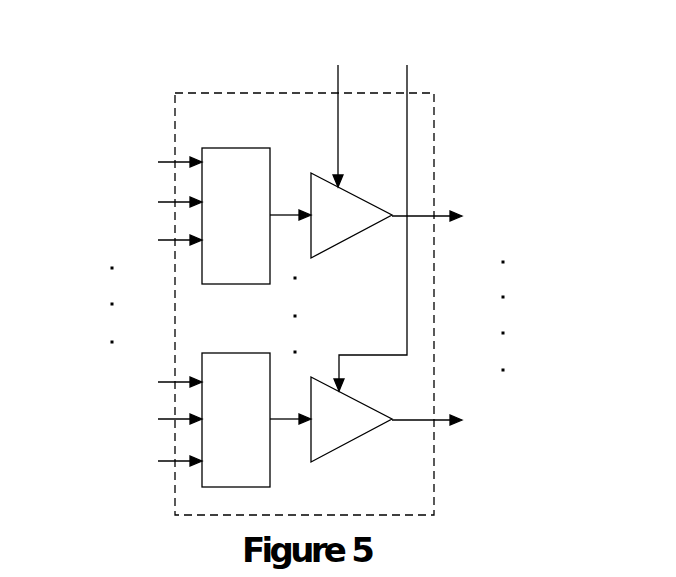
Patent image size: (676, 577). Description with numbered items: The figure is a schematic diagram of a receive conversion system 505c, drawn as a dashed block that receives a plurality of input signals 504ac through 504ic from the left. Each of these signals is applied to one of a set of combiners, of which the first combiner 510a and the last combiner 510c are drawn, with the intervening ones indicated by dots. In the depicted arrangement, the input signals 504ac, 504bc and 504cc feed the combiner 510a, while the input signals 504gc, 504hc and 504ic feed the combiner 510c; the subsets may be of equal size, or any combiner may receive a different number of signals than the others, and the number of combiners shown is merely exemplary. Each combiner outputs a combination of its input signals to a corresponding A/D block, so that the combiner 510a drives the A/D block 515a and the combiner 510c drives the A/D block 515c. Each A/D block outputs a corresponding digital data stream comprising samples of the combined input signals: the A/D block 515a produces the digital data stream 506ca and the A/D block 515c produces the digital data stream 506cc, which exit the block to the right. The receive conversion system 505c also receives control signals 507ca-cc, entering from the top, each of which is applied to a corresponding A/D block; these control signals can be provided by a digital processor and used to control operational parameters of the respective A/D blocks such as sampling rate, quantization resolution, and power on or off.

The receive conversion system 505c is at (290, 287).
The combiner 510a is at (234, 201).
The combiner 510c is at (234, 404).
The A/D block 515a is at (331, 232).
The A/D block 515c is at (331, 435).
The input signal 504ac is at (135, 160).
The input signal 504bc is at (135, 200).
The input signal 504cc is at (135, 238).
The input signal 504gc is at (135, 380).
The input signal 504hc is at (135, 417).
The input signal 504ic is at (138, 459).
The digital data stream 506ca is at (468, 214).
The digital data stream 506cc is at (468, 419).
The control signals 507ca-cc is at (374, 214).